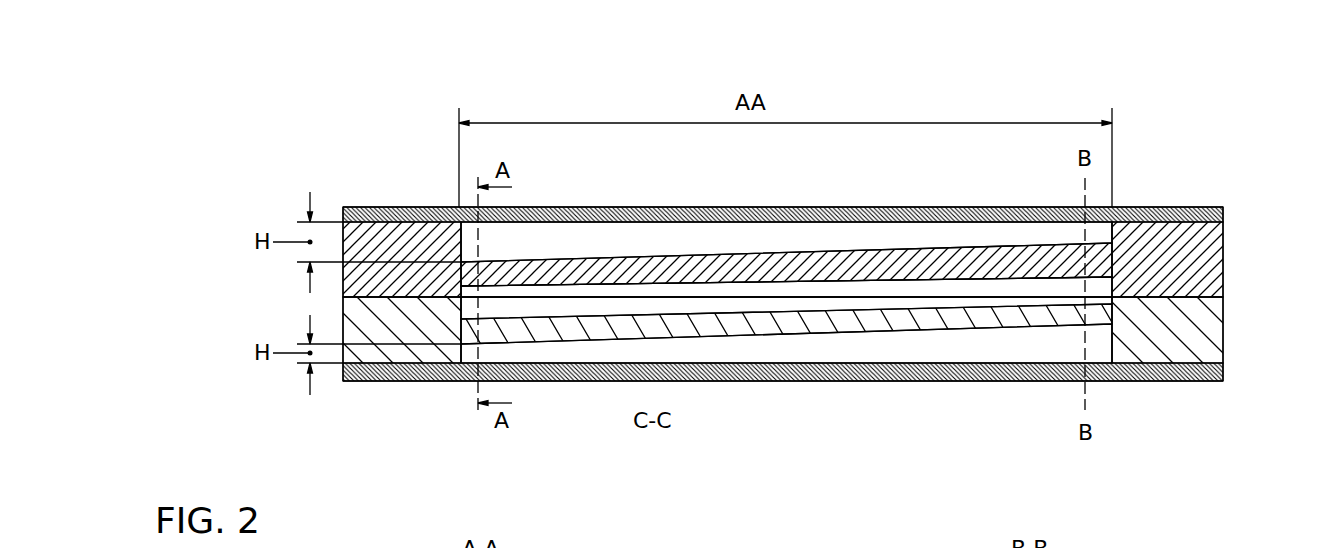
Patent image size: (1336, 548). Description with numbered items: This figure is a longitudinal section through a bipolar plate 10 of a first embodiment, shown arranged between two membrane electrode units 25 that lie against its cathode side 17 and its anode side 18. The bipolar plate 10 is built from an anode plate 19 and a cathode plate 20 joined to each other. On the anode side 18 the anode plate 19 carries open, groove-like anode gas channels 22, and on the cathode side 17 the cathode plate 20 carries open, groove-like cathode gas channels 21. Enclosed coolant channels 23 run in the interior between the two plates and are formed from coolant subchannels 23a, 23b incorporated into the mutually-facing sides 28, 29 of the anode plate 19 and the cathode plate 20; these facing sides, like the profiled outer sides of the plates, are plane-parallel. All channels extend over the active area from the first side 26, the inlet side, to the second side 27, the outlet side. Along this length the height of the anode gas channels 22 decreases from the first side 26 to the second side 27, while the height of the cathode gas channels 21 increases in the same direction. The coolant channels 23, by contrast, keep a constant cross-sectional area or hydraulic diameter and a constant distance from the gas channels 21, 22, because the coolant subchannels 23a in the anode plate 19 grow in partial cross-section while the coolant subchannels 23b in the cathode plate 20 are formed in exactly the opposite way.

The bipolar plate 10 is at (1238, 127).
The cathode side 17 is at (297, 412).
The anode side 18 is at (308, 130).
The anode plate 19 is at (1190, 261).
The cathode plate 20 is at (1190, 347).
The cathode gas channels 21 is at (1098, 350).
The anode gas channels 22 is at (577, 243).
The coolant channels 23 is at (707, 288).
The coolant subchannel in the anode plate 23a is at (847, 287).
The coolant subchannel in the cathode plate 23b is at (913, 303).
The membrane electrode units 25 is at (1190, 216).
The first side of the active area 26 is at (424, 176).
The second side of the active area 27 is at (1137, 155).
The mutually-facing side of the anode plate 28 is at (957, 281).
The mutually-facing side of the cathode plate 29 is at (787, 311).